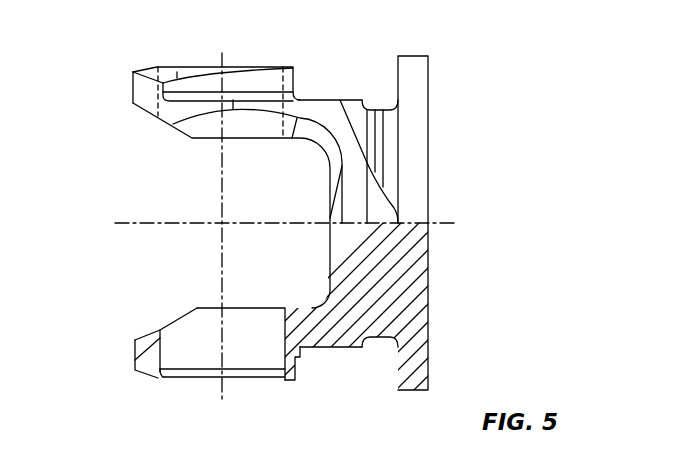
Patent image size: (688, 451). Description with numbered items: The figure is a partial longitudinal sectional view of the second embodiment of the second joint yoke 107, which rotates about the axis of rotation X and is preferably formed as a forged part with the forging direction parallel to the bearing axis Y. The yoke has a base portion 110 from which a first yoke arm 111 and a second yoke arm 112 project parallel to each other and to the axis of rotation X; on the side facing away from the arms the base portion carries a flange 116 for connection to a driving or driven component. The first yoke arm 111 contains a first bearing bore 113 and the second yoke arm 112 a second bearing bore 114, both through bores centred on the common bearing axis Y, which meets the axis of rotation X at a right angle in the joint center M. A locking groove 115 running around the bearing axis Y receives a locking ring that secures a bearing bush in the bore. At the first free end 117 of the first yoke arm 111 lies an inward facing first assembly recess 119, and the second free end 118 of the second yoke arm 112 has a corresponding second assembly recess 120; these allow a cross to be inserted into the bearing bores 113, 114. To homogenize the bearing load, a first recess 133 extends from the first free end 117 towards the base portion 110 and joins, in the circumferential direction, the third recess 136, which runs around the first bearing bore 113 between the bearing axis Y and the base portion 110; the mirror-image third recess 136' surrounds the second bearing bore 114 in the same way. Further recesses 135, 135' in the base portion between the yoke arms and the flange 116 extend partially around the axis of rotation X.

The second joint yoke 107 is at (507, 113).
The base portion 110 is at (383, 200).
The first yoke arm 111 is at (202, 79).
The second yoke arm 112 is at (257, 350).
The first bearing bore 113 is at (283, 129).
The second bearing bore 114 is at (284, 330).
The locking groove 115 is at (164, 376).
The flange 116 is at (417, 138).
The first free end 117 is at (132, 88).
The second free end 118 is at (133, 356).
The first assembly recess 119 is at (142, 110).
The second assembly recess 120 is at (150, 334).
The first recess 133 is at (256, 91).
The third recess of base portion 135 is at (376, 75).
The third recess of base portion 135' is at (375, 367).
The third recess 136 is at (333, 91).
The third recess 136' is at (331, 386).
The joint center M is at (224, 221).
The axis of rotation X is at (154, 222).
The bearing axis Y is at (221, 157).